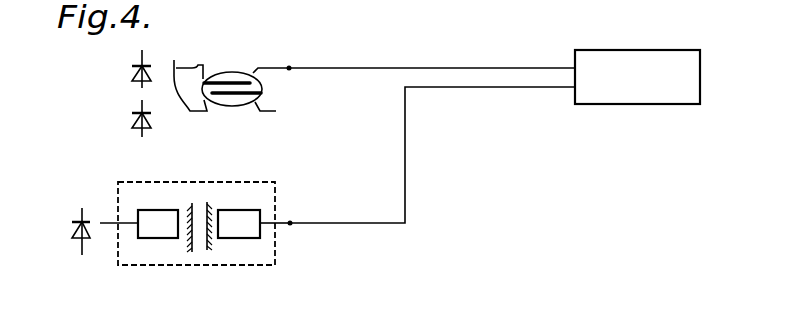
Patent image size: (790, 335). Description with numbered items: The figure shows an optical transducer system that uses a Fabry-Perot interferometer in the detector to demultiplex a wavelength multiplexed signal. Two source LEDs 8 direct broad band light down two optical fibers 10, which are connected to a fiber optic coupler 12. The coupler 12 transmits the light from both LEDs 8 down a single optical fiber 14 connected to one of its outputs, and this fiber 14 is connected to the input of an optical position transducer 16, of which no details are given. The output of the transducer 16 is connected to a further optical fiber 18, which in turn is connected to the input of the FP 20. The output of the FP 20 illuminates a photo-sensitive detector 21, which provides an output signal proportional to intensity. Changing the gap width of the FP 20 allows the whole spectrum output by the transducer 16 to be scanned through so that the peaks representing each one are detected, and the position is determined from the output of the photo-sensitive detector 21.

The source LEDs 8 is at (132, 77).
The optical fibers 10 is at (190, 74).
The fiber optic coupler 12 is at (228, 72).
The single optical fiber 14 is at (310, 66).
The optical position transducer 16 is at (610, 98).
The further optical fiber 18 is at (406, 208).
The Fabry-Perot interferometer 20 is at (275, 182).
The photo-sensitive detector 21 is at (72, 228).